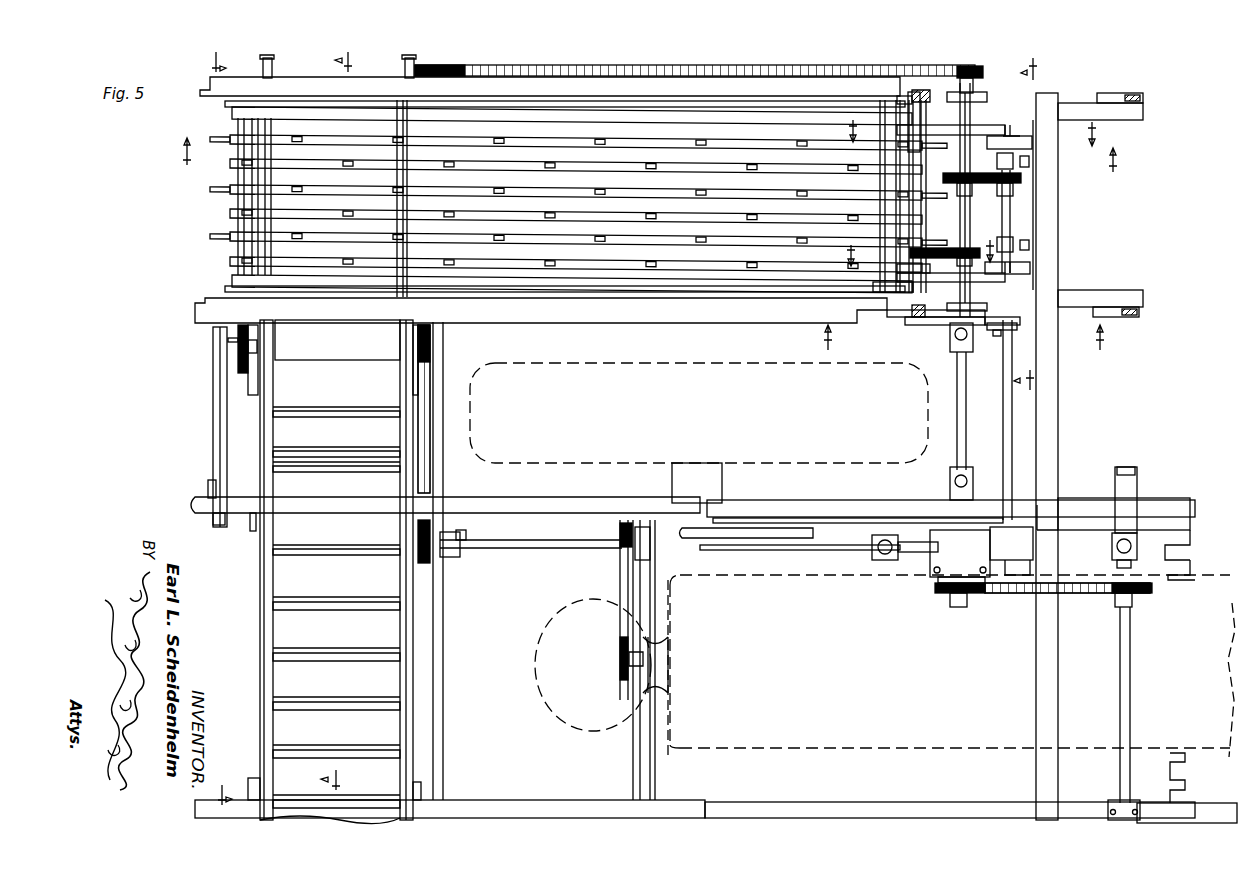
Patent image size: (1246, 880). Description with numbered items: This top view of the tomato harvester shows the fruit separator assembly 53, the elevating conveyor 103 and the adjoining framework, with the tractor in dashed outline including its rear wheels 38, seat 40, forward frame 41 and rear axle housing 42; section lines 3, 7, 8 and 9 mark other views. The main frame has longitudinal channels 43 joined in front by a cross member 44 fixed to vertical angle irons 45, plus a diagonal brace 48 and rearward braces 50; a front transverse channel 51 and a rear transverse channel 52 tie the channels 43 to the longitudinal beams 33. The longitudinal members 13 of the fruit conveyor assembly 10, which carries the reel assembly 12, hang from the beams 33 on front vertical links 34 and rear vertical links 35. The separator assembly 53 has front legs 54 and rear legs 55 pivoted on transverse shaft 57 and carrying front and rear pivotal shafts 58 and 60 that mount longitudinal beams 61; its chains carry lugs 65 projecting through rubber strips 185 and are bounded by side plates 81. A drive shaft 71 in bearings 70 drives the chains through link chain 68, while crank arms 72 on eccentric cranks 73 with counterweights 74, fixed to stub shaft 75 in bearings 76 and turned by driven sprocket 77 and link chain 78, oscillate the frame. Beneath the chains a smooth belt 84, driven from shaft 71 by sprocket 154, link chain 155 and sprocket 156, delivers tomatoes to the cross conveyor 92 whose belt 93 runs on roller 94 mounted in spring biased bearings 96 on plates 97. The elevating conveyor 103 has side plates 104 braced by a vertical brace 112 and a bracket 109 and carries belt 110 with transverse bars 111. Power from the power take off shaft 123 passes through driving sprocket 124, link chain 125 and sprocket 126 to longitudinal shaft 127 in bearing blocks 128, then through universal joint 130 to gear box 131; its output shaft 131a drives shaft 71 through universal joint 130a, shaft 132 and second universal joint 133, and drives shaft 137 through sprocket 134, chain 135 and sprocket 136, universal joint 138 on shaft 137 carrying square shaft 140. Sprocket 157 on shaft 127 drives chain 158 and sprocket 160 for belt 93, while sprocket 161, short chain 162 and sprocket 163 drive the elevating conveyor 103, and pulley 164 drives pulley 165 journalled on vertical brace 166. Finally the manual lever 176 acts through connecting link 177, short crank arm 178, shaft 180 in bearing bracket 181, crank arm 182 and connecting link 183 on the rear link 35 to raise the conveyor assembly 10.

The section line 3 is at (969, 337).
The section line 7 is at (1025, 227).
The section line 8 is at (647, 155).
The section line 9 is at (978, 133).
The fruit conveyor assembly 10 is at (922, 246).
The harvesting reel assembly 12 is at (225, 426).
The longitudinal members 13 is at (325, 419).
The longitudinal beams 33 is at (1140, 120).
The front vertical links 34 is at (1140, 93).
The rear vertical links 35 is at (920, 98).
The rear wheels 38 is at (633, 462).
The tractor seat 40 is at (535, 700).
The forward frame 41 is at (886, 578).
The rear axle housing 42 is at (722, 480).
The longitudinal channels 43 is at (1190, 509).
The cross member 44 is at (1175, 549).
The vertical angle irons 45 is at (1195, 577).
The longitudinal diagonal brace 48 is at (803, 500).
The rearwardly extending brace 50 is at (578, 497).
The front transverse channel 51 is at (1058, 408).
The rear transverse channel 52 is at (443, 628).
The fruit separator assembly 53 is at (222, 221).
The front legs 54 is at (873, 285).
The rear legs 55 is at (232, 112).
The transverse shaft 57 is at (268, 178).
The front pivotal shaft 58 is at (897, 184).
The rear pivotal shaft 60 is at (237, 200).
The longitudinal beams 61 is at (228, 104).
The lugs 65 is at (212, 237).
The link chain 68 is at (950, 242).
The bearings 70 is at (987, 98).
The drive shaft 71 is at (970, 213).
The crank arms 72 is at (950, 135).
The eccentric cranks 73 is at (1008, 136).
The counterweights 74 is at (1032, 141).
The stub shaft 75 is at (1010, 214).
The bearings 76 is at (1030, 166).
The driven sprocket 77 is at (1020, 183).
The link chain 78 is at (1013, 186).
The vertical side plates 81 is at (638, 98).
The smooth belt 84 is at (560, 134).
The cross conveyor 92 is at (337, 362).
The belt 93 is at (343, 343).
The roller 94 is at (273, 333).
The spring biased bearings 96 is at (262, 62).
The plates 97 is at (274, 60).
The elevating conveyor 103 is at (260, 588).
The side plates 104 is at (268, 650).
The bracket 109 is at (252, 780).
The conveyor belt 110 is at (335, 439).
The transverse bars 111 is at (322, 468).
The vertical brace 112 is at (422, 786).
The power take off shaft 123 is at (670, 675).
The driving sprocket 124 is at (620, 668).
The link chain 125 is at (620, 580).
The sprocket 126 is at (620, 547).
The longitudinal shaft 127 is at (512, 548).
The bearing blocks 128 is at (450, 557).
The universal joint 130 is at (872, 565).
The universal joint 130a is at (950, 478).
The gear box 131 is at (971, 554).
The output shaft 131a is at (957, 607).
The shaft 132 is at (955, 425).
The second universal joint 133 is at (950, 345).
The sprocket 134 is at (935, 590).
The chain 135 is at (1000, 593).
The sprocket 136 is at (1110, 600).
The shaft 137 is at (1120, 665).
The universal joint 138 is at (1112, 541).
The square shaft 140 is at (1137, 490).
The sprocket 154 is at (972, 66).
The link chain 155 is at (748, 66).
The sprocket 156 is at (450, 66).
The sprocket 157 is at (445, 557).
The chain 158 is at (432, 471).
The sprocket 160 is at (432, 341).
The sprocket 161 is at (215, 327).
The short chain 162 is at (246, 373).
The sprocket 163 is at (238, 372).
The pulley 164 is at (213, 345).
The pulley 165 is at (213, 482).
The vertical brace 166 is at (243, 522).
The manual lever 176 is at (718, 548).
The connecting link 177 is at (838, 533).
The short crank arm 178 is at (1011, 551).
The shaft 180 is at (1003, 430).
The bearing bracket 181 is at (1040, 530).
The crank arm 182 is at (996, 336).
The connecting link 183 is at (950, 335).
The rubber strips 185 is at (600, 185).